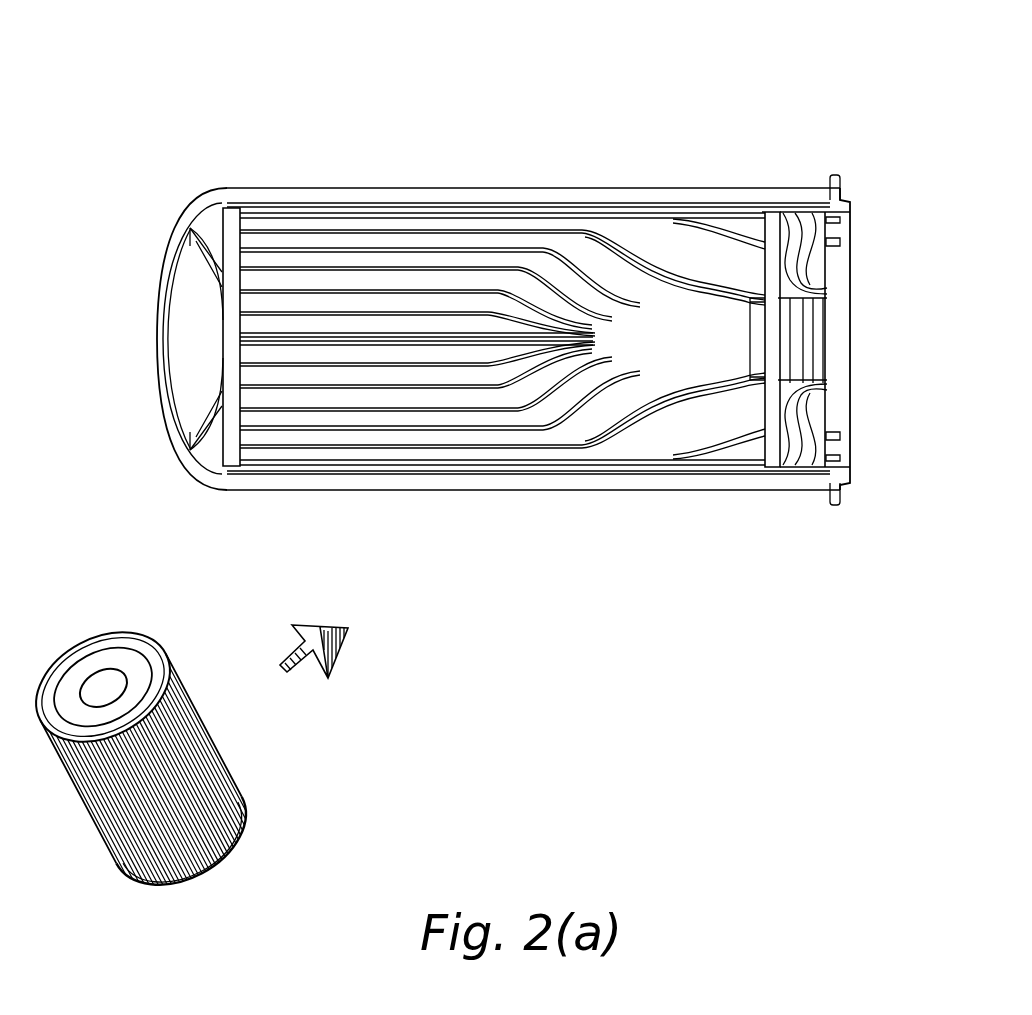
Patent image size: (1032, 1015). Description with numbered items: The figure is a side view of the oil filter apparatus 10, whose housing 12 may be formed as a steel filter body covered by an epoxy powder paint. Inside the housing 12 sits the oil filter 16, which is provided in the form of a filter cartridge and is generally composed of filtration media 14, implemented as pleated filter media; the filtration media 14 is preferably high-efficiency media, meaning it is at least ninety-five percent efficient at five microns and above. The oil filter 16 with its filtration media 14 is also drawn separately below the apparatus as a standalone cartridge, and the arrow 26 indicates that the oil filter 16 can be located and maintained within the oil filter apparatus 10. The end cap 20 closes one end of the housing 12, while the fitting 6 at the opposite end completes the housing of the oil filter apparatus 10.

The end cap / fluid fitting 6 is at (780, 337).
The oil filter apparatus 10 is at (849, 82).
The housing 12 is at (305, 187).
The filtration media 14 is at (407, 248).
The oil filter 16 is at (400, 467).
The end cap 20 is at (182, 450).
The arrow 26 is at (340, 652).